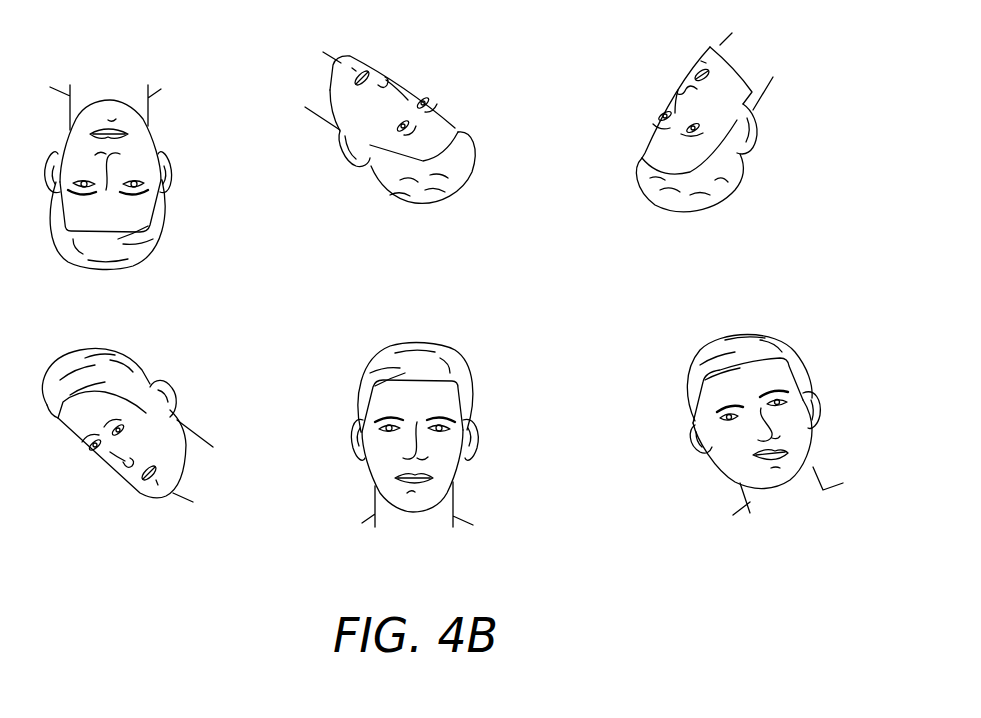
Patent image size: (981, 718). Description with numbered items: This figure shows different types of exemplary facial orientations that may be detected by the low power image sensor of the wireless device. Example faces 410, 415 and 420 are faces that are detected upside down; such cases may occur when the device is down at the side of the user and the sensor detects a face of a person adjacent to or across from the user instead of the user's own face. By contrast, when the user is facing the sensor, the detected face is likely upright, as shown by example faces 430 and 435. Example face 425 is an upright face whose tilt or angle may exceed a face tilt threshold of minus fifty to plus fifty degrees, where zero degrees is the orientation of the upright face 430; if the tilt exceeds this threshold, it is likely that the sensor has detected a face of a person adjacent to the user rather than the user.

The example face 410 is at (170, 195).
The example face 415 is at (462, 130).
The example face 420 is at (753, 125).
The example face 425 is at (160, 383).
The upright face 430 is at (477, 438).
The example face 435 is at (817, 432).